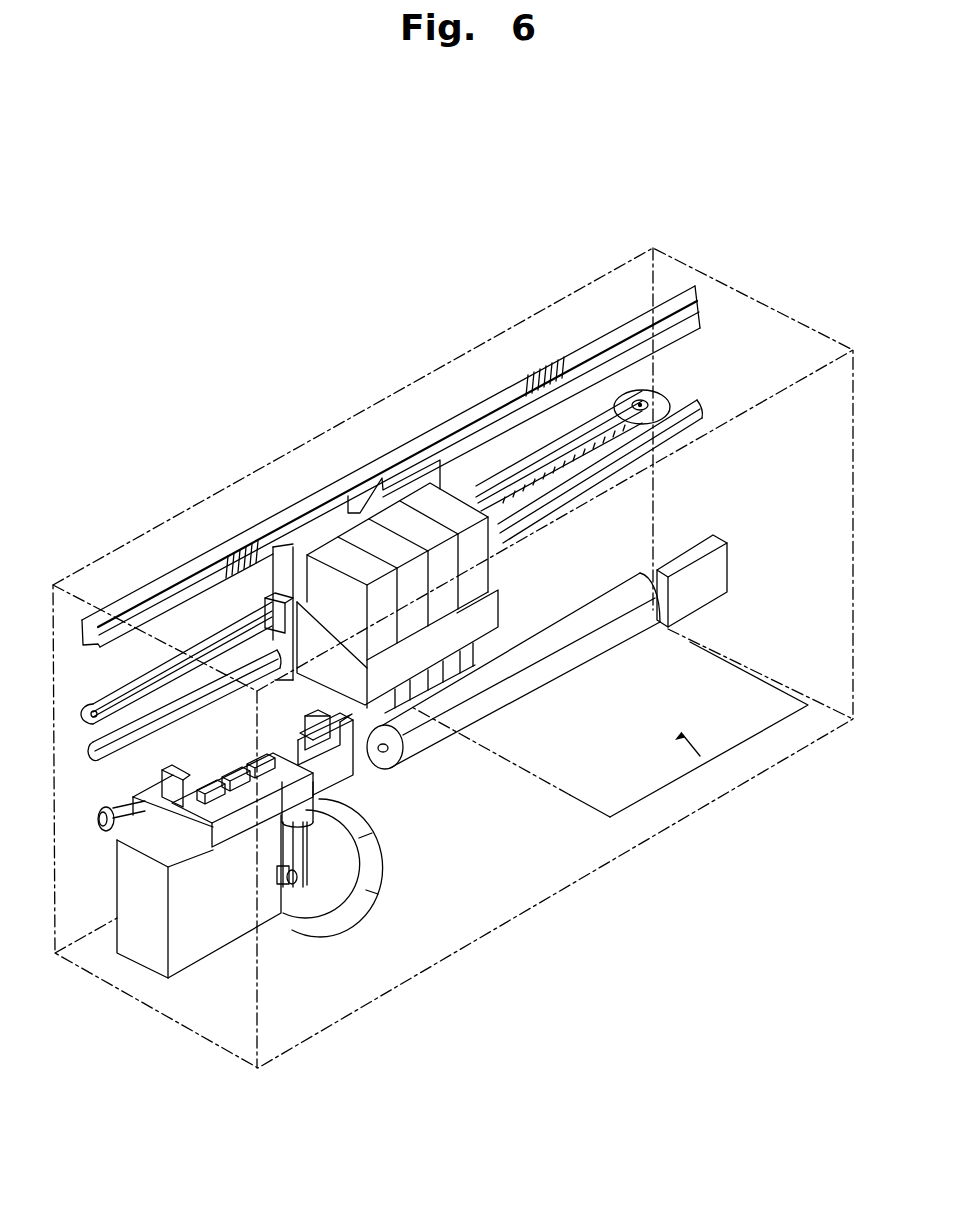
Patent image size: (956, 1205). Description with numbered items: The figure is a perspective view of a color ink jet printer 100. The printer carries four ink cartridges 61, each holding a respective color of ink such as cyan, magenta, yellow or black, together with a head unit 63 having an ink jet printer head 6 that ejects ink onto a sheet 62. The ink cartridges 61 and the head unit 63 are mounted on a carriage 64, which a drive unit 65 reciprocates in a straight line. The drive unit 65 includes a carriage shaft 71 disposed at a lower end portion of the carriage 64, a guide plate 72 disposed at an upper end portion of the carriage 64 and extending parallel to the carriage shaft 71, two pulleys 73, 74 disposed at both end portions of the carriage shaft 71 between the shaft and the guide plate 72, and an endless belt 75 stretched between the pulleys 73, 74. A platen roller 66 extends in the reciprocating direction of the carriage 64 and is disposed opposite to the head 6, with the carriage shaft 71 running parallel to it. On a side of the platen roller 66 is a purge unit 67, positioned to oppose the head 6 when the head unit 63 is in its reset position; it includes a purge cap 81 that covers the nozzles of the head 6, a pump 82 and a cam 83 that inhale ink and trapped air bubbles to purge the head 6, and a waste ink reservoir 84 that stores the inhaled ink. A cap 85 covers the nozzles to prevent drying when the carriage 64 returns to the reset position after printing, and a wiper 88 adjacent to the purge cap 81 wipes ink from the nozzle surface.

The color ink jet printer 100 is at (310, 268).
The guide plate 72 is at (603, 338).
The drive unit 65 is at (697, 373).
The pulley 73 is at (640, 403).
The carriage shaft 71 is at (698, 402).
The endless belt 75 is at (553, 445).
The ink cartridge 61 is at (445, 498).
The carriage 64 is at (280, 570).
The pulley 74 is at (93, 707).
The platen roller 66 is at (632, 587).
The head unit 63 is at (512, 581).
The ink jet printer head 6 is at (492, 648).
The sheet 62 is at (582, 800).
The waste ink reservoir 84 is at (198, 948).
The cap 85 is at (187, 798).
The purge cap 81 is at (287, 722).
The wiper 88 is at (333, 723).
The pump 82 is at (303, 850).
The cam 83 is at (360, 915).
The purge unit 67 is at (290, 950).